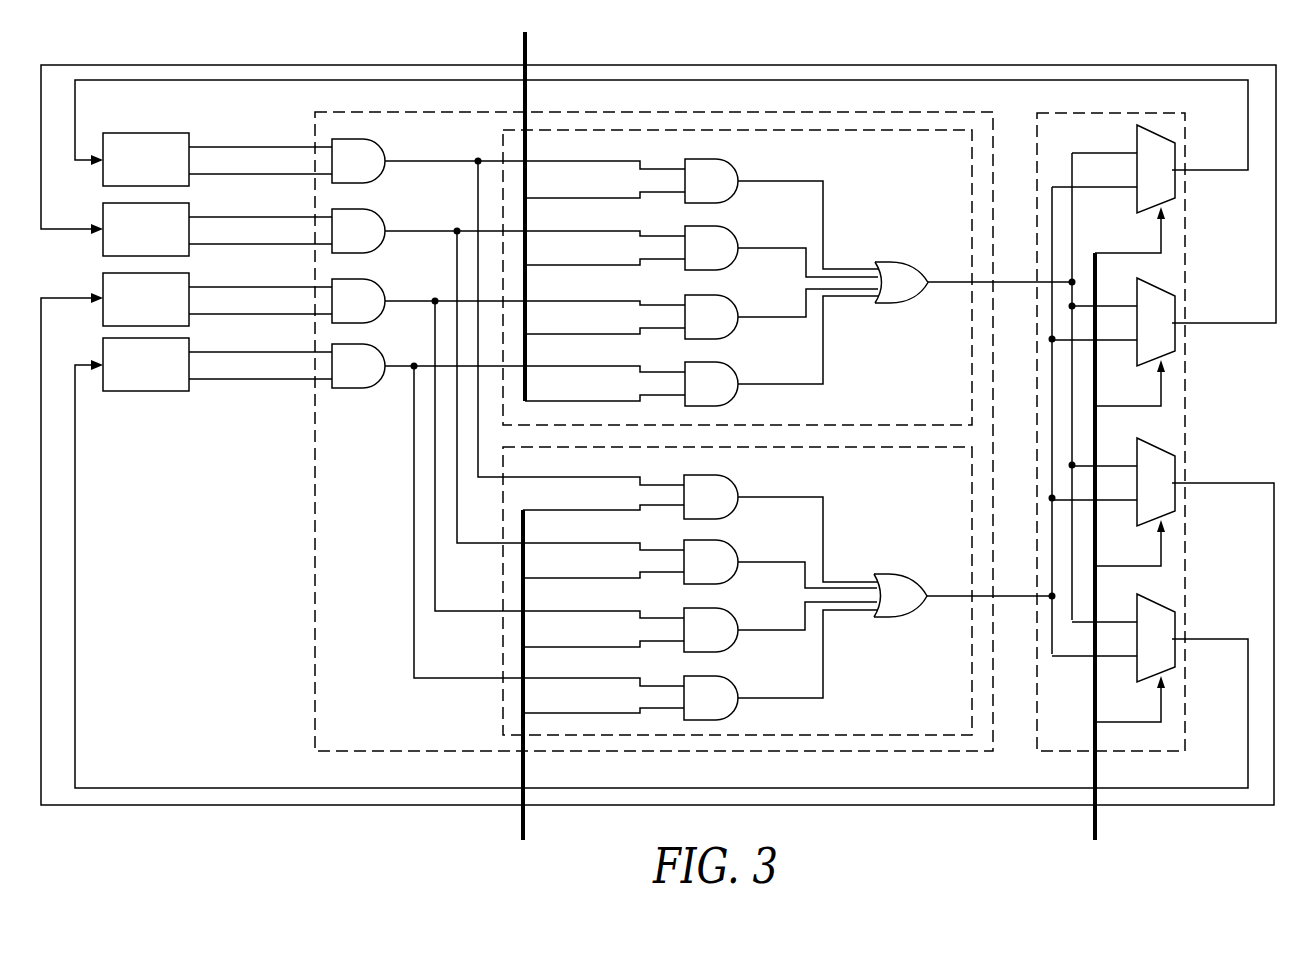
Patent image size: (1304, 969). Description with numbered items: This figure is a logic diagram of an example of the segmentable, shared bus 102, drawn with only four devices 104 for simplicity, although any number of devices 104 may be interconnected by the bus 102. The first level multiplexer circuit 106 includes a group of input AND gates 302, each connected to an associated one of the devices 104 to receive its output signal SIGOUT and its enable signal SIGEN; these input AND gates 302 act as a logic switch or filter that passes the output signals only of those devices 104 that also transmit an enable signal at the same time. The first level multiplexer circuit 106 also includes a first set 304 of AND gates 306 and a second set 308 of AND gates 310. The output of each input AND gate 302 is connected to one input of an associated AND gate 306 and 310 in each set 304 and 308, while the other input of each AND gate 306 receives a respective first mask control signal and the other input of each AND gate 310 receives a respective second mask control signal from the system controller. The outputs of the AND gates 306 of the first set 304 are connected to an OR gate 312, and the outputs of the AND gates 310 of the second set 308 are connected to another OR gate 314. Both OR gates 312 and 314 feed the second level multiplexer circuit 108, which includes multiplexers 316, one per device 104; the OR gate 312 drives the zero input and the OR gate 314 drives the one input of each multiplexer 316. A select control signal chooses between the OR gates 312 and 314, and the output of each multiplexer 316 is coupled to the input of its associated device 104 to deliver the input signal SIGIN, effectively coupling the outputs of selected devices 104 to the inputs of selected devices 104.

The segmentable, shared bus 102 is at (1210, 52).
The devices 104 is at (101, 168).
The first level multiplexer circuit 106 is at (980, 112).
The second level multiplexer circuit 108 is at (1177, 113).
The input AND gates 302 is at (377, 141).
The first set of AND gates 304 is at (502, 133).
The AND gates 306 is at (736, 162).
The second set of AND gates 308 is at (502, 722).
The AND gates 310 is at (736, 478).
The OR gate 312 is at (915, 266).
The OR gate 314 is at (916, 580).
The multiplexers 316 is at (1177, 189).